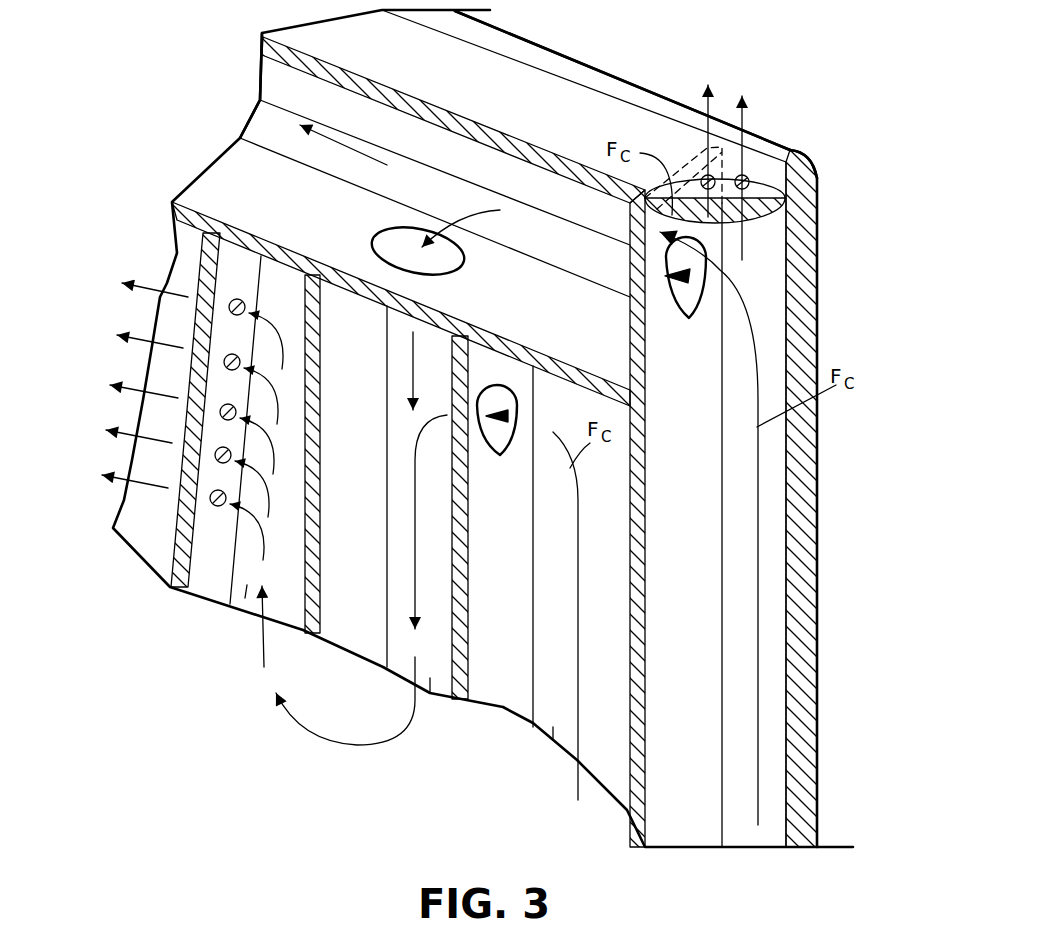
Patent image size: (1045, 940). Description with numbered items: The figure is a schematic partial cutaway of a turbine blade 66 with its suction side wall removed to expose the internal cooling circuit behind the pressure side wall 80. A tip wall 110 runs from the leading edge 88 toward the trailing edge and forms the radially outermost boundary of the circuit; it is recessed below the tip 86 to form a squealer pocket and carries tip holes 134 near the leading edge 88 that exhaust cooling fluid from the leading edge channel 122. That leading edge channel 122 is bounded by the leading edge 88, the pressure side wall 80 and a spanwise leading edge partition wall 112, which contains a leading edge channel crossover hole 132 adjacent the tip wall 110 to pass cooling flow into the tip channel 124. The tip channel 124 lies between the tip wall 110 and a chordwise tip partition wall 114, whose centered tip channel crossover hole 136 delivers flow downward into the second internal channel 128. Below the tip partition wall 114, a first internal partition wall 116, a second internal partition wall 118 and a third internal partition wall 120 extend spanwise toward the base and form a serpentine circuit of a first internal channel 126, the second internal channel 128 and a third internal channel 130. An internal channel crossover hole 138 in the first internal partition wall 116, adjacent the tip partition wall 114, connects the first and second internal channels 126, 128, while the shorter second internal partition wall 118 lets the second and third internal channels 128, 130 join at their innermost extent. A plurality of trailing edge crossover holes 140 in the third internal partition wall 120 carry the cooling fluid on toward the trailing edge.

The blade 66 is at (872, 153).
The pressure side wall 80 is at (616, 79).
The tip 86 is at (794, 152).
The leading edge 88 is at (820, 530).
The tip wall 110 is at (520, 112).
The leading edge partition wall 112 is at (710, 517).
The tip partition wall 114 is at (303, 225).
The first internal partition wall 116 is at (517, 569).
The second internal partition wall 118 is at (368, 524).
The third internal partition wall 120 is at (230, 569).
The leading edge channel 122 is at (772, 677).
The tip channel 124 is at (260, 120).
The first internal channel 126 is at (553, 741).
The second internal channel 128 is at (430, 692).
The third internal channel 130 is at (245, 598).
The leading edge channel crossover hole 132 is at (689, 318).
The tip holes 134 is at (798, 184).
The tip channel crossover hole 136 is at (462, 258).
The internal channel crossover hole 138 is at (499, 455).
The trailing edge crossover holes 140 is at (216, 500).